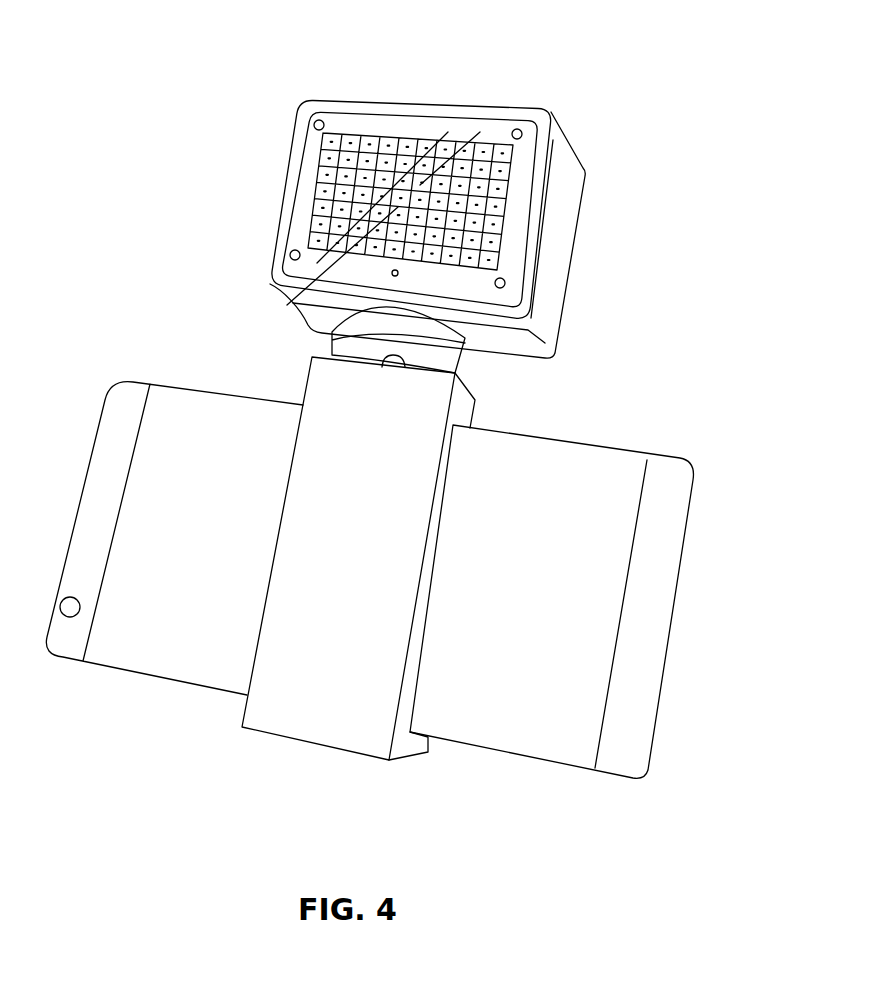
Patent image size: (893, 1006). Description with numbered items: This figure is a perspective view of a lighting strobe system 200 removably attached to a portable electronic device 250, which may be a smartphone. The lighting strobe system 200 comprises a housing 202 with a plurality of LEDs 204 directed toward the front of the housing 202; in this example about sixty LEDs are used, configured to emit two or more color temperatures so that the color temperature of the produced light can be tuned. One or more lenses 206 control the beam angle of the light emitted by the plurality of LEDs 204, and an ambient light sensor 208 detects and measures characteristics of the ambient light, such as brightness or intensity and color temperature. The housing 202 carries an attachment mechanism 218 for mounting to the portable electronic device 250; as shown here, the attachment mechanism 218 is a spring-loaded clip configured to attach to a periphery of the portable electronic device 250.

The lighting strobe system 200 is at (88, 64).
The housing 202 is at (562, 193).
The plurality of LEDs 204 is at (348, 142).
The lenses 206 is at (422, 123).
The ambient light sensor 208 is at (393, 272).
The attachment mechanism 218 is at (290, 683).
The portable electronic device 250 is at (607, 474).